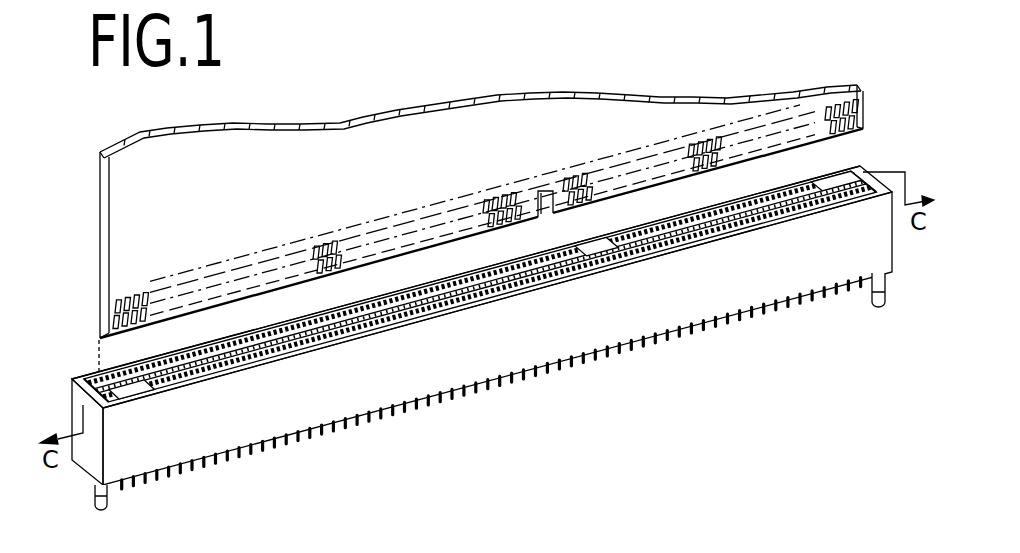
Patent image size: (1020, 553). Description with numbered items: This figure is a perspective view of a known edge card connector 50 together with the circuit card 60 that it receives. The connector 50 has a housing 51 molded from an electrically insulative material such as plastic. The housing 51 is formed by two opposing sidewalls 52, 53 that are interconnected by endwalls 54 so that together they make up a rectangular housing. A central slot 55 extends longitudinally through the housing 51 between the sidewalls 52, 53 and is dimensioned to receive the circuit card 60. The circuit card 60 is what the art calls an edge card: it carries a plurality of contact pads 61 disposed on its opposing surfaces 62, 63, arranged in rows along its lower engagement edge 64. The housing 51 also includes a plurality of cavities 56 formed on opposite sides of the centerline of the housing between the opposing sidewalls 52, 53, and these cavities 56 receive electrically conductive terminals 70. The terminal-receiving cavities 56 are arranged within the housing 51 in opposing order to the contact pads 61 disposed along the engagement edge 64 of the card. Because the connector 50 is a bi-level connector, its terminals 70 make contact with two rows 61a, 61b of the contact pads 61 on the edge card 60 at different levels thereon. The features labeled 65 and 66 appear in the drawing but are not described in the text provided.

The edge card connector 50 is at (71, 414).
The housing 51 is at (293, 409).
The sidewall 52 is at (580, 304).
The sidewall 53 is at (806, 182).
The endwalls 54 is at (88, 381).
The central slot 55 is at (600, 259).
The cavities 56 is at (320, 347).
The circuit card 60 is at (369, 148).
The contact pads 61 is at (330, 245).
The row of contact pads 61a is at (517, 193).
The row of contact pads 61b is at (485, 222).
The surface 62 is at (228, 229).
The surface 63 is at (100, 250).
The lower engagement edge 64 is at (612, 203).
The end key 65 is at (118, 382).
The card guide rail 66 is at (182, 352).
The terminals 70 is at (490, 391).